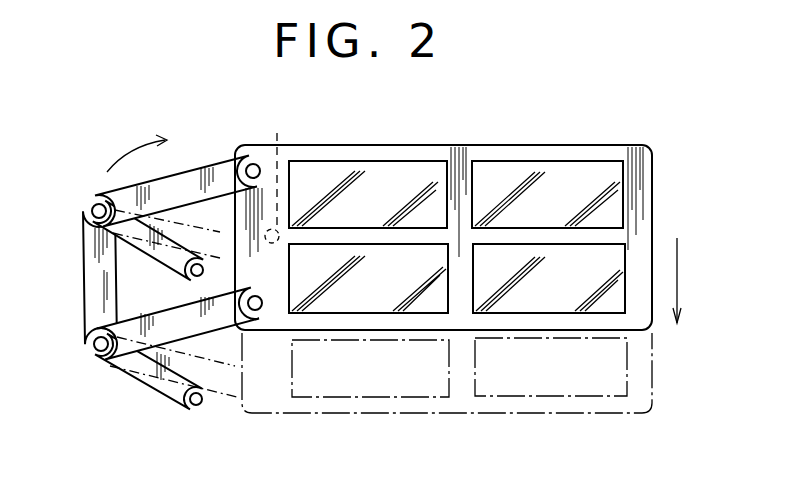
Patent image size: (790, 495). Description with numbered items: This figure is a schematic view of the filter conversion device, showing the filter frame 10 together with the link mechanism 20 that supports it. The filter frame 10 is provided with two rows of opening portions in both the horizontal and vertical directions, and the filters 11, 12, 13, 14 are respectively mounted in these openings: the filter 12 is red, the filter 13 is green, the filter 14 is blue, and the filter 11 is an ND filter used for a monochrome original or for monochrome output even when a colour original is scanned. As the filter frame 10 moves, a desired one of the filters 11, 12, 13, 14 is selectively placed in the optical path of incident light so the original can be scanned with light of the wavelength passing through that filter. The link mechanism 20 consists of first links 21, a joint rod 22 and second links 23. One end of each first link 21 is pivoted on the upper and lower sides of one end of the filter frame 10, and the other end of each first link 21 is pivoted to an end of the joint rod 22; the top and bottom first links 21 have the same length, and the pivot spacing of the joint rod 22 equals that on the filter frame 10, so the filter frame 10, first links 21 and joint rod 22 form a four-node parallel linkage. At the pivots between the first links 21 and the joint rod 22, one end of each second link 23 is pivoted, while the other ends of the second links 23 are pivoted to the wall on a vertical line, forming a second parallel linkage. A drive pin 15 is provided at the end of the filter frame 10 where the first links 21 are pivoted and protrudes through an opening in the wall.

The filter frame 10 is at (471, 145).
The ND filter 11 is at (561, 290).
The red filter 12 is at (379, 290).
The green filter 13 is at (377, 204).
The blue filter 14 is at (563, 204).
The drive pin 15 is at (282, 176).
The link mechanism 20 is at (157, 305).
The first link 21 is at (204, 162).
The joint rod 22 is at (88, 297).
The second link 23 is at (151, 258).